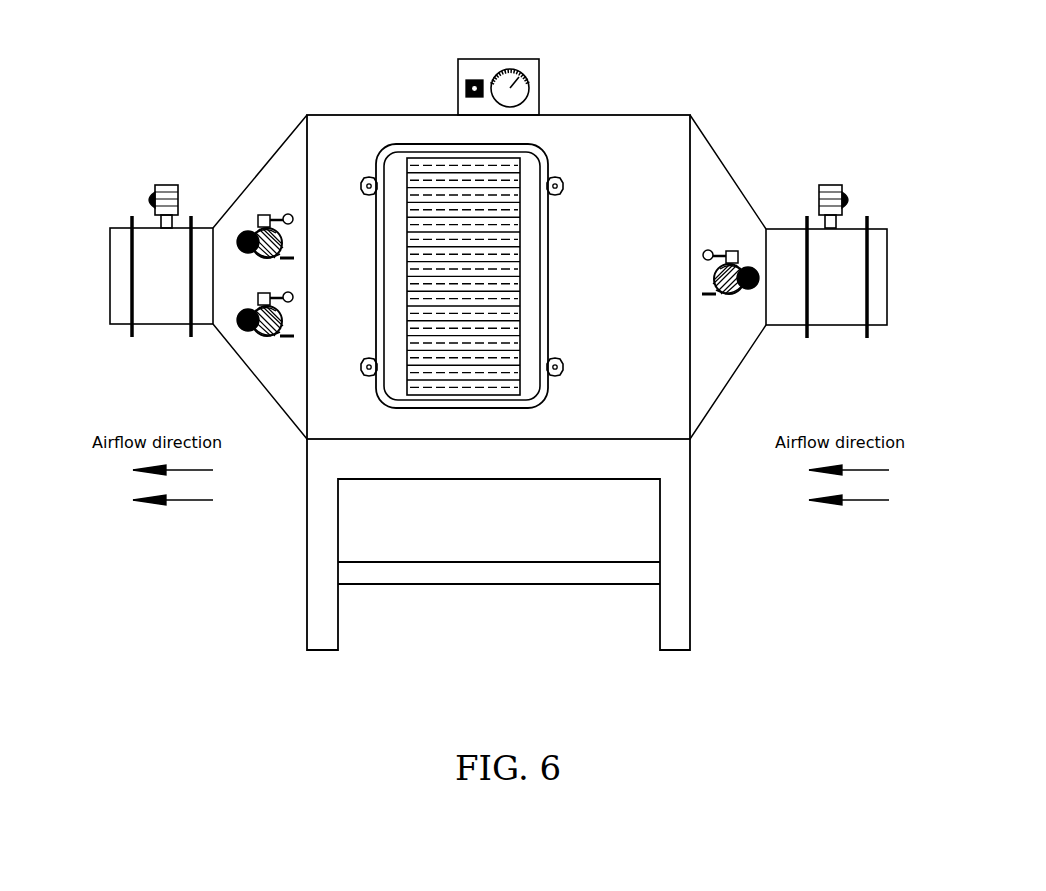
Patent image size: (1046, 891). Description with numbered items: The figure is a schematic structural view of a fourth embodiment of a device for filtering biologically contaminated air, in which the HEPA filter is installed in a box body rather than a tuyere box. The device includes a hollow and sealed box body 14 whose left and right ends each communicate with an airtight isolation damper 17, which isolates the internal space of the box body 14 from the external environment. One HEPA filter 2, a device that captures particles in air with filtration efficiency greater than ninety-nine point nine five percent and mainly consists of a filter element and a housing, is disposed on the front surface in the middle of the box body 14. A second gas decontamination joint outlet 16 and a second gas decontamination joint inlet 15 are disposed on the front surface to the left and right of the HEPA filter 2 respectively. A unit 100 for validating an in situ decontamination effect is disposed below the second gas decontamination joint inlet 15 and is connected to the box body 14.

The HEPA filter 2 is at (523, 240).
The box body 14 is at (408, 113).
The second gas decontamination joint inlet 15 is at (738, 257).
The second gas decontamination joint outlet 16 is at (257, 228).
The airtight isolation damper 17 is at (167, 247).
The unit for validating an in situ decontamination effect 100 is at (245, 333).